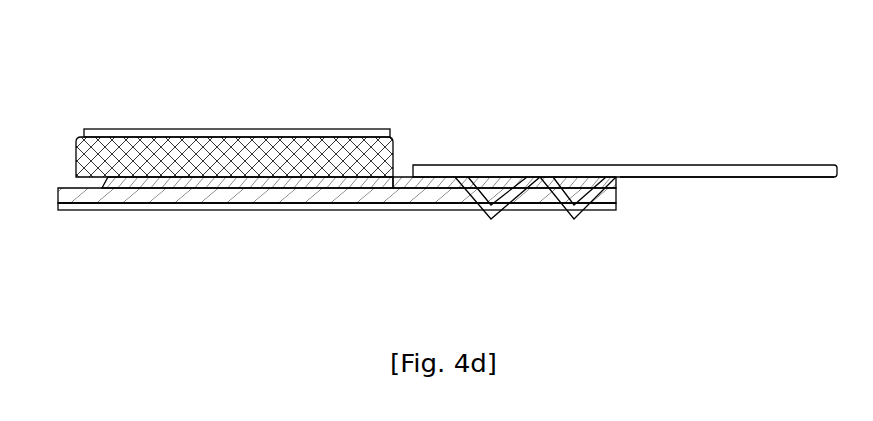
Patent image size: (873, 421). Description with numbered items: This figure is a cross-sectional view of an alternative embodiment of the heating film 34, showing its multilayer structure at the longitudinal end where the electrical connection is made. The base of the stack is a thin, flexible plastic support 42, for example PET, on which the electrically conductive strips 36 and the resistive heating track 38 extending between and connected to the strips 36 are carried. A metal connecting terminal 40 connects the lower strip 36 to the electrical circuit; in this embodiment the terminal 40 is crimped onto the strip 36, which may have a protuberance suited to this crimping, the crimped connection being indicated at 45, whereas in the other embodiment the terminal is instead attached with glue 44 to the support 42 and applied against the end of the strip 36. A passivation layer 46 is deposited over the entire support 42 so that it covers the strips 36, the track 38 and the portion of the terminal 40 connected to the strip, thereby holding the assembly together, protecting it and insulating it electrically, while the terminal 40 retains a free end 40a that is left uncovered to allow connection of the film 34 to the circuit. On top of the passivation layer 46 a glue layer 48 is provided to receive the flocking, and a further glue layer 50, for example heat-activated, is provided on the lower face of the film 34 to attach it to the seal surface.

The heating film 34 is at (348, 114).
The electrically conductive strip 36 is at (127, 192).
The resistive heating track 38 is at (232, 178).
The connecting terminal 40 is at (604, 165).
The free end of terminal 40a is at (680, 178).
The plastic support 42 is at (60, 210).
The glue 44 is at (297, 178).
The conductive vias 45 is at (492, 219).
The passivation layer 46 is at (179, 146).
The glue layer 48 is at (107, 133).
The further glue layer 50 is at (378, 208).